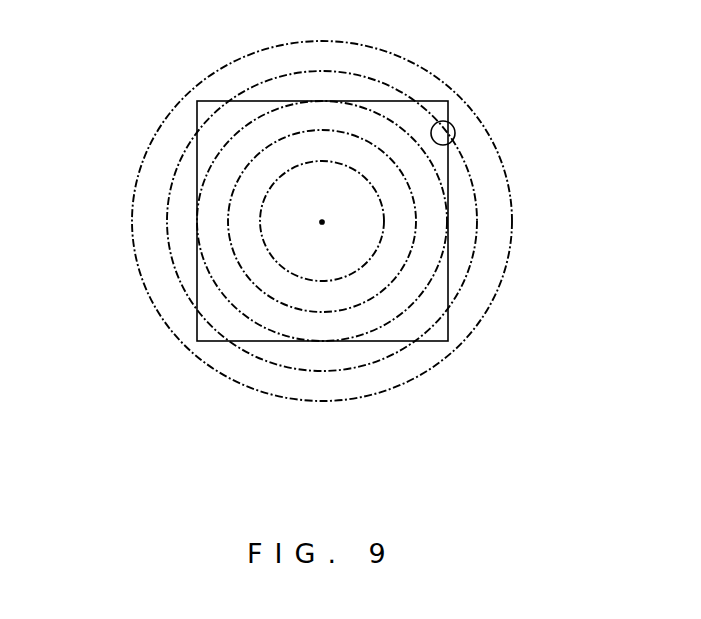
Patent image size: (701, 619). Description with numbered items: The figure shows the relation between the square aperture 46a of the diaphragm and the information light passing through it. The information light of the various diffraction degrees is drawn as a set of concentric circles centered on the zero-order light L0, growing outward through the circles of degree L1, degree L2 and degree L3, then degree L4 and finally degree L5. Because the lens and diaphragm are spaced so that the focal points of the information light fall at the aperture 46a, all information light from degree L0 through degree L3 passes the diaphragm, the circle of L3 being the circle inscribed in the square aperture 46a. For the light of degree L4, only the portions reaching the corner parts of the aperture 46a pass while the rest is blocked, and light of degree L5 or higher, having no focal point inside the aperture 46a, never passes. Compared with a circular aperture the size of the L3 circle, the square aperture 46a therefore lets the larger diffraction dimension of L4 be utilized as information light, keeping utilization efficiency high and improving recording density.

The degree L0 information light L0 is at (322, 222).
The degree L1 information light L1 is at (292, 273).
The degree L2 information light L2 is at (235, 252).
The degree L3 information light L3 is at (203, 177).
The degree L4 information light L4 is at (206, 126).
The degree L5 information light L5 is at (405, 62).
The aperture 46a is at (448, 118).